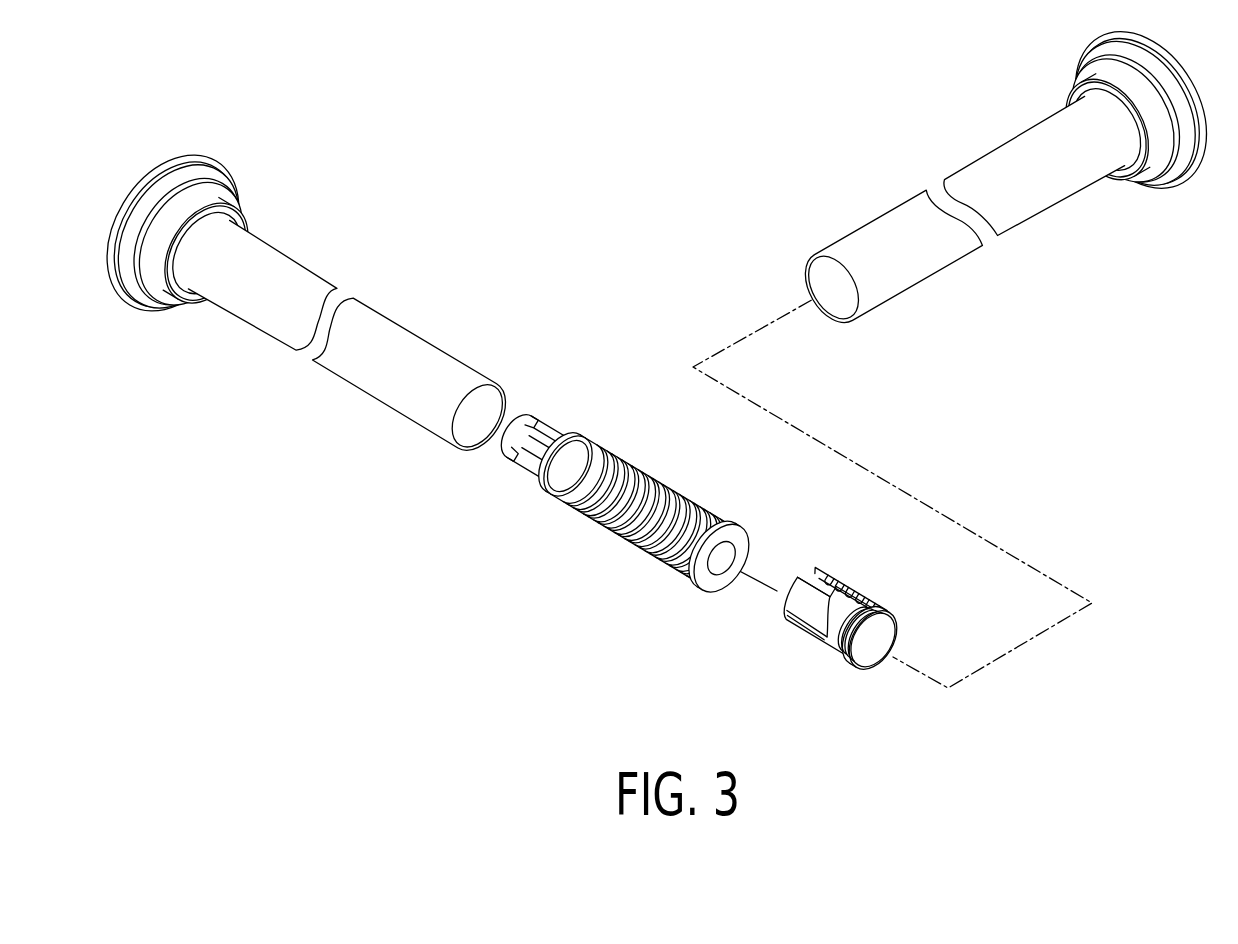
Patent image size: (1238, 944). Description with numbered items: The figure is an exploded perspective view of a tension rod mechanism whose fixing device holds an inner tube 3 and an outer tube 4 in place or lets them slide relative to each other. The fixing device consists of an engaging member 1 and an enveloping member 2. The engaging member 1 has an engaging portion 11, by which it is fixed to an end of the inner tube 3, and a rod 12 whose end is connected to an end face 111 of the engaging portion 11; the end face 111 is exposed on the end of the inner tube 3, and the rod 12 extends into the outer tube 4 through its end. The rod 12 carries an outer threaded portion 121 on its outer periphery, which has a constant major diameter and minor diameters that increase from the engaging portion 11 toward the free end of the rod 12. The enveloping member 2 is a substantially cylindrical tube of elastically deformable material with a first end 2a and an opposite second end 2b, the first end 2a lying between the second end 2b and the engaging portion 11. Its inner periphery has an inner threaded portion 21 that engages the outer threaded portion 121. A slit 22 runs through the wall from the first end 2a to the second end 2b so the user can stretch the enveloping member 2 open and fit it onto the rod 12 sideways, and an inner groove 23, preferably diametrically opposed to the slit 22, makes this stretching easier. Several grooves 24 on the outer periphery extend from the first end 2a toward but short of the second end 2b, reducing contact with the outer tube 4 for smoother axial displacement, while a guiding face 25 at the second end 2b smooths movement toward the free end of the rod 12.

The engaging member 1 is at (627, 504).
The engaging portion 11 is at (540, 470).
The end face 111 is at (592, 442).
The rod 12 is at (655, 528).
The outer threaded portion 121 is at (643, 492).
The enveloping member 2 is at (832, 623).
The inner threaded portion 21 is at (897, 647).
The slit 22 is at (827, 582).
The groove 23 is at (873, 663).
The grooves 24 is at (802, 595).
The guiding face 25 is at (885, 607).
The first end 2a is at (777, 613).
The second end 2b is at (845, 652).
The inner tube 3 is at (400, 335).
The outer tube 4 is at (870, 230).